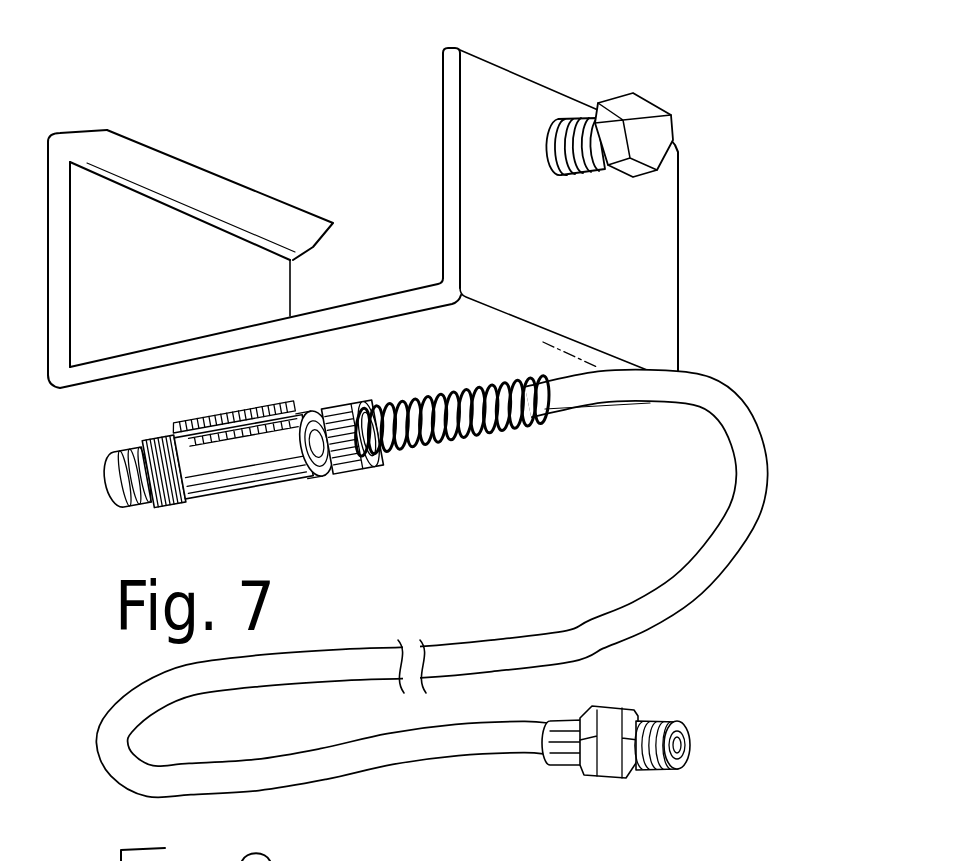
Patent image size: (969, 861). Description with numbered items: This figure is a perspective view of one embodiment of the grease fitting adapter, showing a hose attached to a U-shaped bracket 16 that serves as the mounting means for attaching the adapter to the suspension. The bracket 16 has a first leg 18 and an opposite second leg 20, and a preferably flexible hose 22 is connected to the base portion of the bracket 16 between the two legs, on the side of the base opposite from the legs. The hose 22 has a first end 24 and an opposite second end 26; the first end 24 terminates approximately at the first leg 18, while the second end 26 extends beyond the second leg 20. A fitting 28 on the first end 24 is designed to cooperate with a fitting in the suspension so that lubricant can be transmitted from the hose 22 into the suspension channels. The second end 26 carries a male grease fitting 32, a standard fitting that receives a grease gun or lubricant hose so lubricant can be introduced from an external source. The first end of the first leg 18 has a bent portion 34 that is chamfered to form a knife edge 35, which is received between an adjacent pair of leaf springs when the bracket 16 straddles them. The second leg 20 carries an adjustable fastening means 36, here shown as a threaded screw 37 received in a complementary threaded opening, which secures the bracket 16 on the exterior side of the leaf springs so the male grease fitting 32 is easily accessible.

The U-shaped bracket 16 is at (357, 290).
The first leg 18 is at (143, 233).
The second leg 20 is at (622, 243).
The hose 22 is at (673, 582).
The first end 24 is at (515, 748).
The second end 26 is at (568, 403).
The fitting 28 is at (687, 733).
The male grease fitting 32 is at (103, 490).
The bent portion 34 is at (88, 170).
The knife edge 35 is at (247, 187).
The adjustable fastening means 36 is at (655, 108).
The threaded screw 37 is at (584, 112).